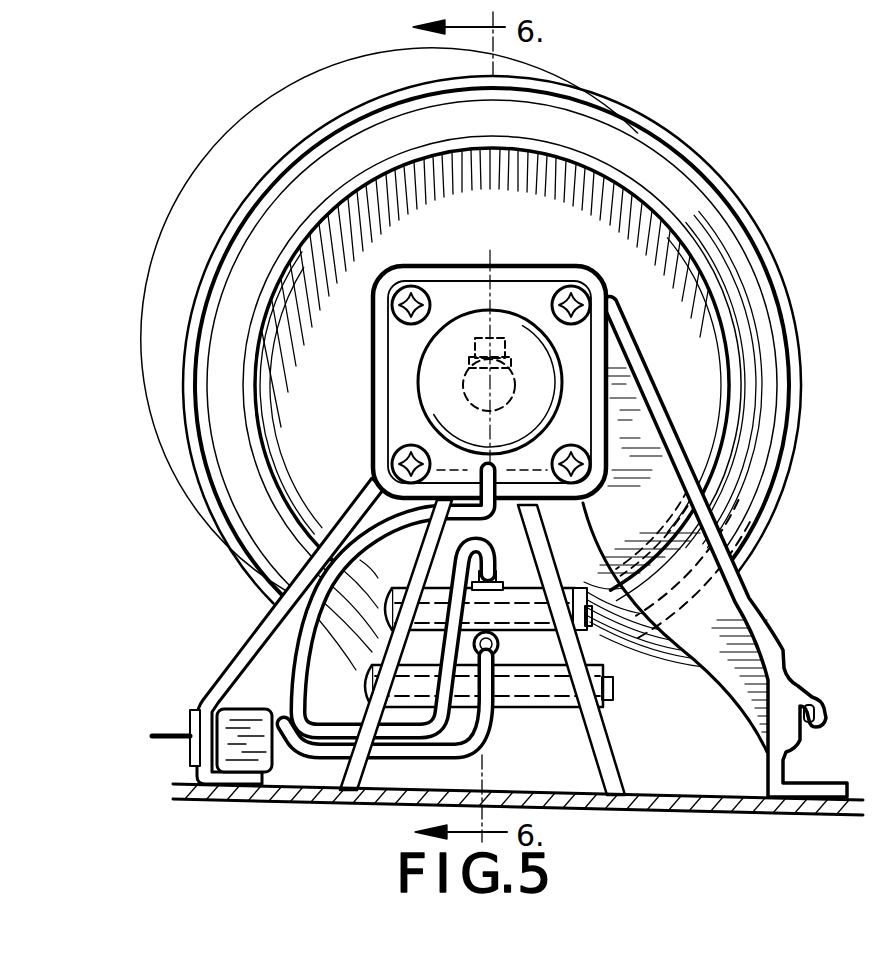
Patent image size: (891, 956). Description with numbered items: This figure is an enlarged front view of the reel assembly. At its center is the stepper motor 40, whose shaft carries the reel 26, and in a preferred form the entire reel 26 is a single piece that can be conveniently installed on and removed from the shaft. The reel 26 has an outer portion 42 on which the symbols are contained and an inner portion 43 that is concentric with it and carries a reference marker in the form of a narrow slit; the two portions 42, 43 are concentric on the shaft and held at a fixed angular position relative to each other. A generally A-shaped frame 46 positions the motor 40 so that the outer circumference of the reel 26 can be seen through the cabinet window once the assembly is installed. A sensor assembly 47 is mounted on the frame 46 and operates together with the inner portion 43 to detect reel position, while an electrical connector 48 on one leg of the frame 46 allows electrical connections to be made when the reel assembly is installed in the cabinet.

The reel 26 is at (752, 183).
The stepper motor 40 is at (537, 293).
The outer portion 42 is at (790, 296).
The inner portion 43 is at (740, 391).
The frame 46 is at (730, 632).
The sensor assembly 47 is at (530, 655).
The electrical connector 48 is at (240, 727).